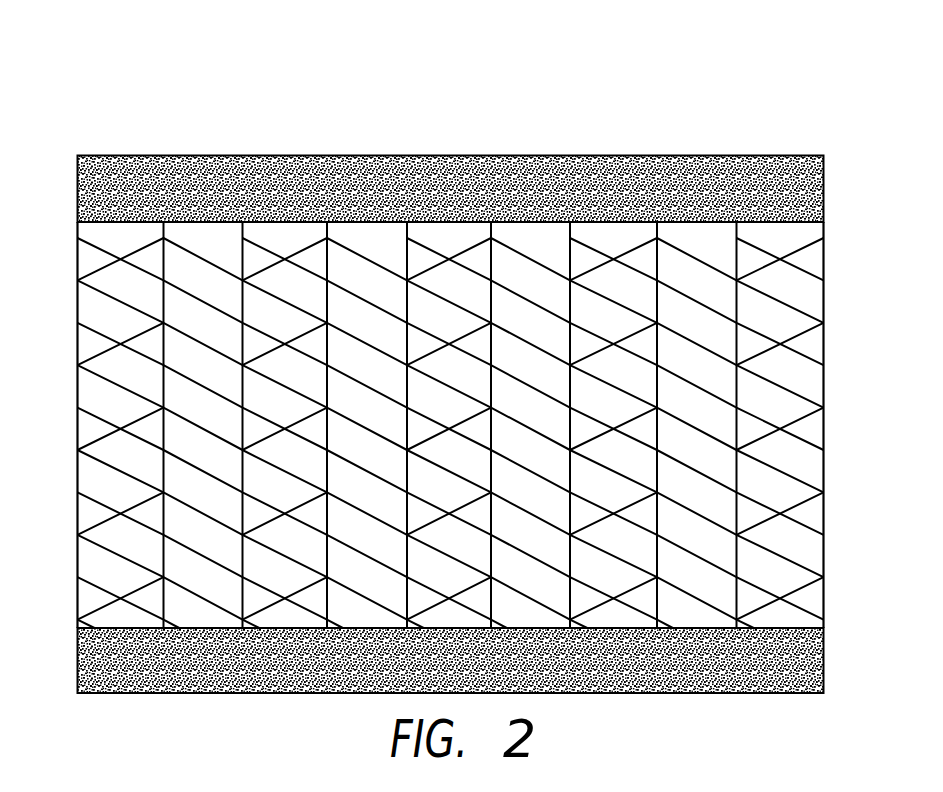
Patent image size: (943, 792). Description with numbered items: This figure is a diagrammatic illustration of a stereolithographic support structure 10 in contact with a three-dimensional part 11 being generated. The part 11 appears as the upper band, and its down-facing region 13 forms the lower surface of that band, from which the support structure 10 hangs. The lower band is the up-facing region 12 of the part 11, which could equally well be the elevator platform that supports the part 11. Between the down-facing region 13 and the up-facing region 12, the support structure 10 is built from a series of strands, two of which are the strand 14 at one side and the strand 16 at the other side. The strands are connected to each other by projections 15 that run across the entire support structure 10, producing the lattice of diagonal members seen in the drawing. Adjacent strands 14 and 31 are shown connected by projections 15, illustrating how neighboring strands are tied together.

The support structure 10 is at (581, 107).
The three-dimensional object or part 11 is at (262, 155).
The up-facing region 12 is at (77, 660).
The down-facing region 13 is at (117, 222).
The strand 14 is at (824, 253).
The projections 15 is at (143, 358).
The strand 16 is at (77, 303).
The strand 31 is at (740, 625).